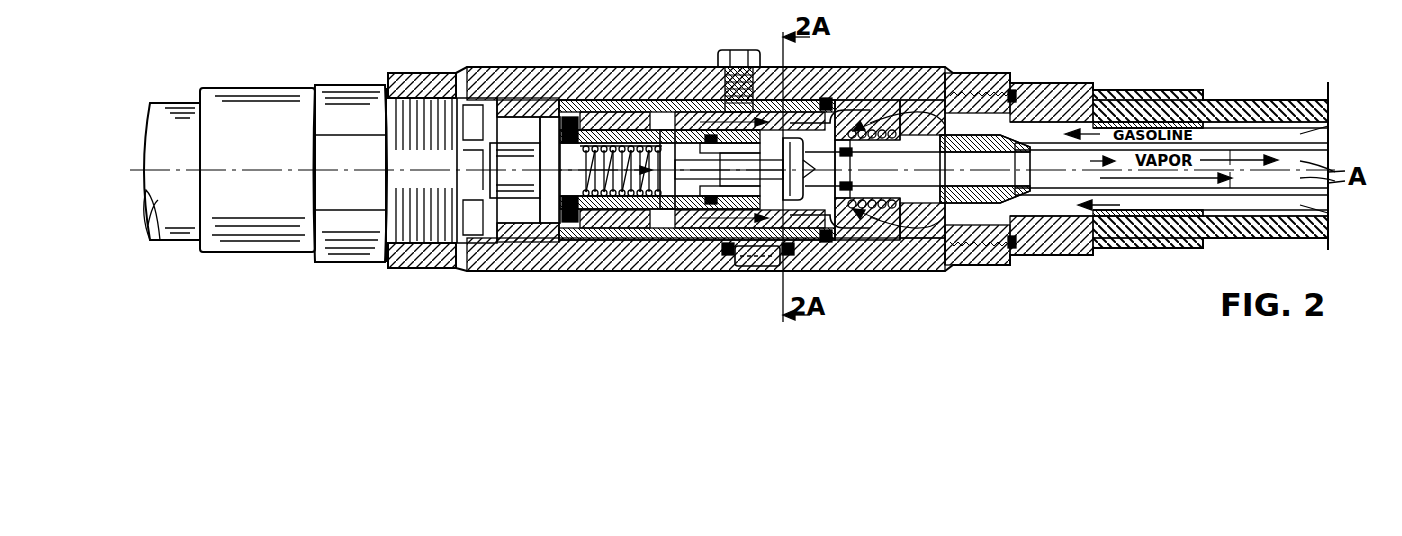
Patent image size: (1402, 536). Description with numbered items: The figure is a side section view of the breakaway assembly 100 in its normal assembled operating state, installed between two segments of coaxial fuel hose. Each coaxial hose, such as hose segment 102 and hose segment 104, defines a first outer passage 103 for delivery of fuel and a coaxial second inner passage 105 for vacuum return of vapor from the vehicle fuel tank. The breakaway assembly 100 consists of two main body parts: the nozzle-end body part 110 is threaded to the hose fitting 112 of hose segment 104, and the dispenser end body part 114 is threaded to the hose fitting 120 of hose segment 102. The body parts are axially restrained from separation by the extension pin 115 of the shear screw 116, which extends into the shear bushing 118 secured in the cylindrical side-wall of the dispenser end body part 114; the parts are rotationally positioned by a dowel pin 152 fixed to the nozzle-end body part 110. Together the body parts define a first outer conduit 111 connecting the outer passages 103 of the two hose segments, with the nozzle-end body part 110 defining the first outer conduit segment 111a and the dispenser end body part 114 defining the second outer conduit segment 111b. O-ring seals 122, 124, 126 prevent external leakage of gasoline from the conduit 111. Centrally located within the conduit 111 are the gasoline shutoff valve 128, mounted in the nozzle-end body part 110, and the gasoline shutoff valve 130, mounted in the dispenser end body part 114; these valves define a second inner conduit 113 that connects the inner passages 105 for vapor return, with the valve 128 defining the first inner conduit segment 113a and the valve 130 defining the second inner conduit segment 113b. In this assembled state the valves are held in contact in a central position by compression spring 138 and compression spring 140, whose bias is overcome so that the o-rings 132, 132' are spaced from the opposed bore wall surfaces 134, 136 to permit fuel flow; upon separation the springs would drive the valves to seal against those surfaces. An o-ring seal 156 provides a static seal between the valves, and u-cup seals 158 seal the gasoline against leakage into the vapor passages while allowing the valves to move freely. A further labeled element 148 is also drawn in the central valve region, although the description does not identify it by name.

The breakaway assembly 100 is at (401, 274).
The hose segment 102 is at (1253, 238).
The first outer passage 103 is at (1292, 128).
The hose segment 104 is at (167, 102).
The second inner passage 105 is at (1230, 157).
The nozzle-end body part 110 is at (418, 72).
The first outer conduit 111 is at (664, 100).
The first outer conduit segment 111a is at (585, 92).
The second outer conduit segment 111b is at (682, 100).
The hose fitting 112 is at (333, 82).
The second inner conduit 113 is at (993, 182).
The first inner conduit segment 113a is at (680, 212).
The second inner conduit segment 113b is at (905, 170).
The dispenser end body part 114 is at (922, 68).
The extension pin 115 is at (822, 82).
The shear screw 116 is at (750, 55).
The shear bushing 118 is at (712, 70).
The hose fitting 120 is at (1082, 83).
The o-ring seal 122 is at (1014, 92).
The o-ring seal 124 is at (368, 106).
The o-ring seal 126 is at (662, 205).
The nozzle end shutoff valve 128 is at (528, 95).
The dispenser end shutoff valve 130 is at (880, 98).
The o-ring 132 is at (528, 216).
The o-ring 132' is at (918, 204).
The bore wall surface 134 is at (598, 95).
The bore wall surface 136 is at (800, 232).
The compression spring 138 is at (560, 172).
The compression spring 140 is at (928, 75).
The valve body 148 is at (785, 215).
The dowel pin 152 is at (768, 268).
The o-ring seal 156 is at (640, 110).
The u-cup seals 158 is at (835, 170).